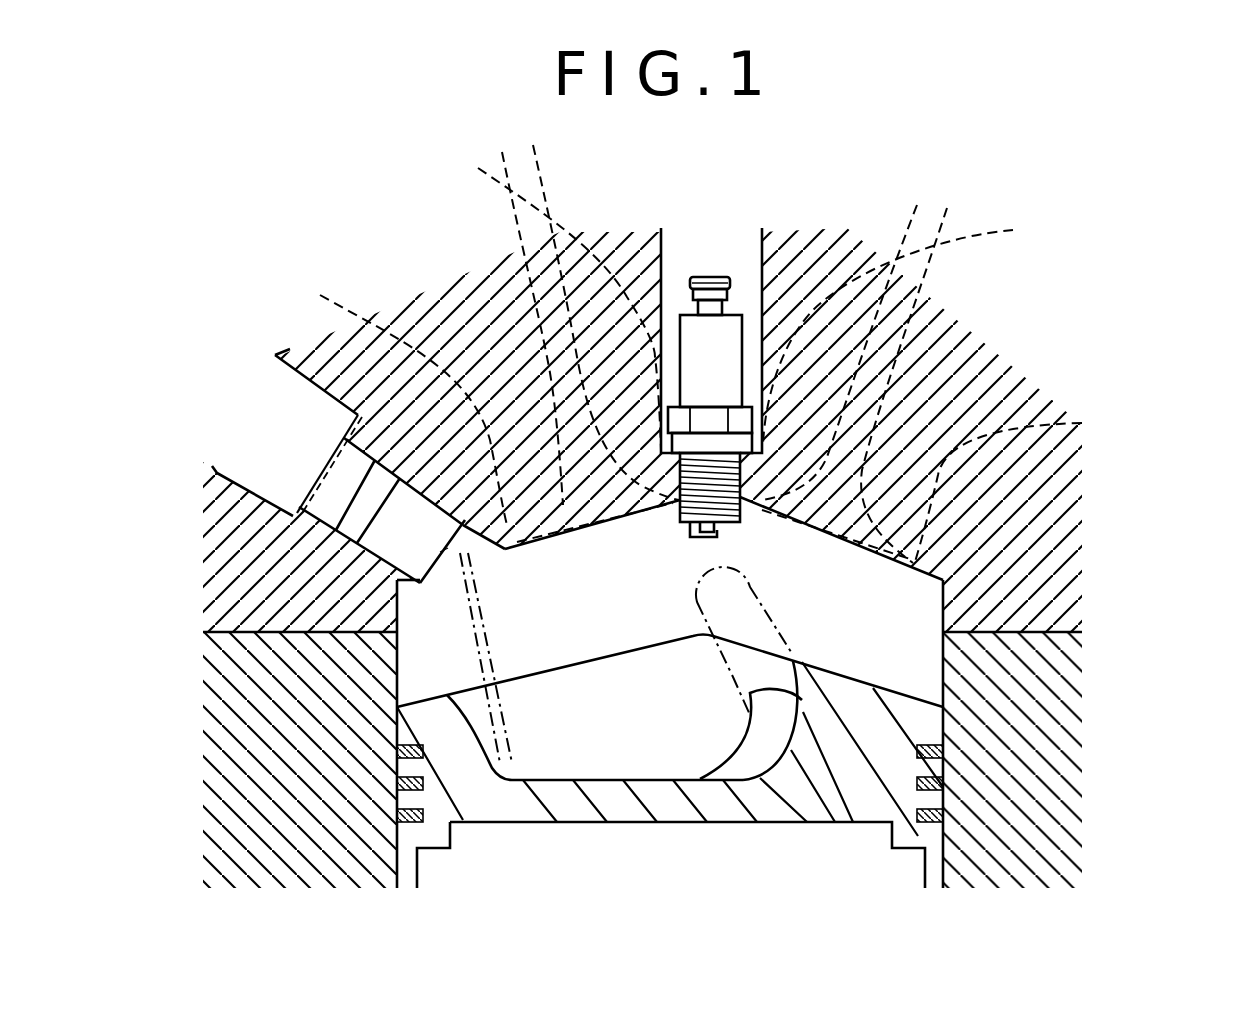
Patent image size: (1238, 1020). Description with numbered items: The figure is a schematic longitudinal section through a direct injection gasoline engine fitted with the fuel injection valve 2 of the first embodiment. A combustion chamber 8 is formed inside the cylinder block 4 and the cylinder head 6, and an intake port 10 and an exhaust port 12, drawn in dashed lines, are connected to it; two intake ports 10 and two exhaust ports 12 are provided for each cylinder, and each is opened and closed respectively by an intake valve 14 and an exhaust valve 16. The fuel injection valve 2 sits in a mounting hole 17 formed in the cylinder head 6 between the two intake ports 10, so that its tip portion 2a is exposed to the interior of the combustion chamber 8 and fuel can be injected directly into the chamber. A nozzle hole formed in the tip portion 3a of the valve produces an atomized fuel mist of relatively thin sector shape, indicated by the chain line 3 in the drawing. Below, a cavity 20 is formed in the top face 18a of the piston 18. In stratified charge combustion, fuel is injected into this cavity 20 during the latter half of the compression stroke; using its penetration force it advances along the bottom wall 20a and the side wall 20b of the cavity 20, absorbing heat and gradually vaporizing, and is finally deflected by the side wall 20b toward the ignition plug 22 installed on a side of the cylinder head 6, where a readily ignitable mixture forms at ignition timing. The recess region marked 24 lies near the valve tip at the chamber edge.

The fuel injection valve 2 is at (245, 450).
The tip portion 2a is at (488, 599).
The fuel spray 3 is at (450, 548).
The tip portion 3a is at (477, 570).
The cylinder block 4 is at (1040, 780).
The cylinder head 6 is at (1043, 572).
The combustion chamber 8 is at (925, 670).
The intake port 10 is at (420, 245).
The exhaust port 12 is at (1027, 330).
The intake valve 14 is at (542, 175).
The exhaust valve 16 is at (903, 233).
The mounting hole 17 is at (432, 570).
The piston 18 is at (820, 800).
The top face 18a is at (857, 675).
The cavity 20 is at (626, 655).
The bottom wall 20a is at (585, 778).
The side wall 20b is at (750, 693).
The ignition plug 22 is at (737, 322).
The recess 24 is at (415, 565).